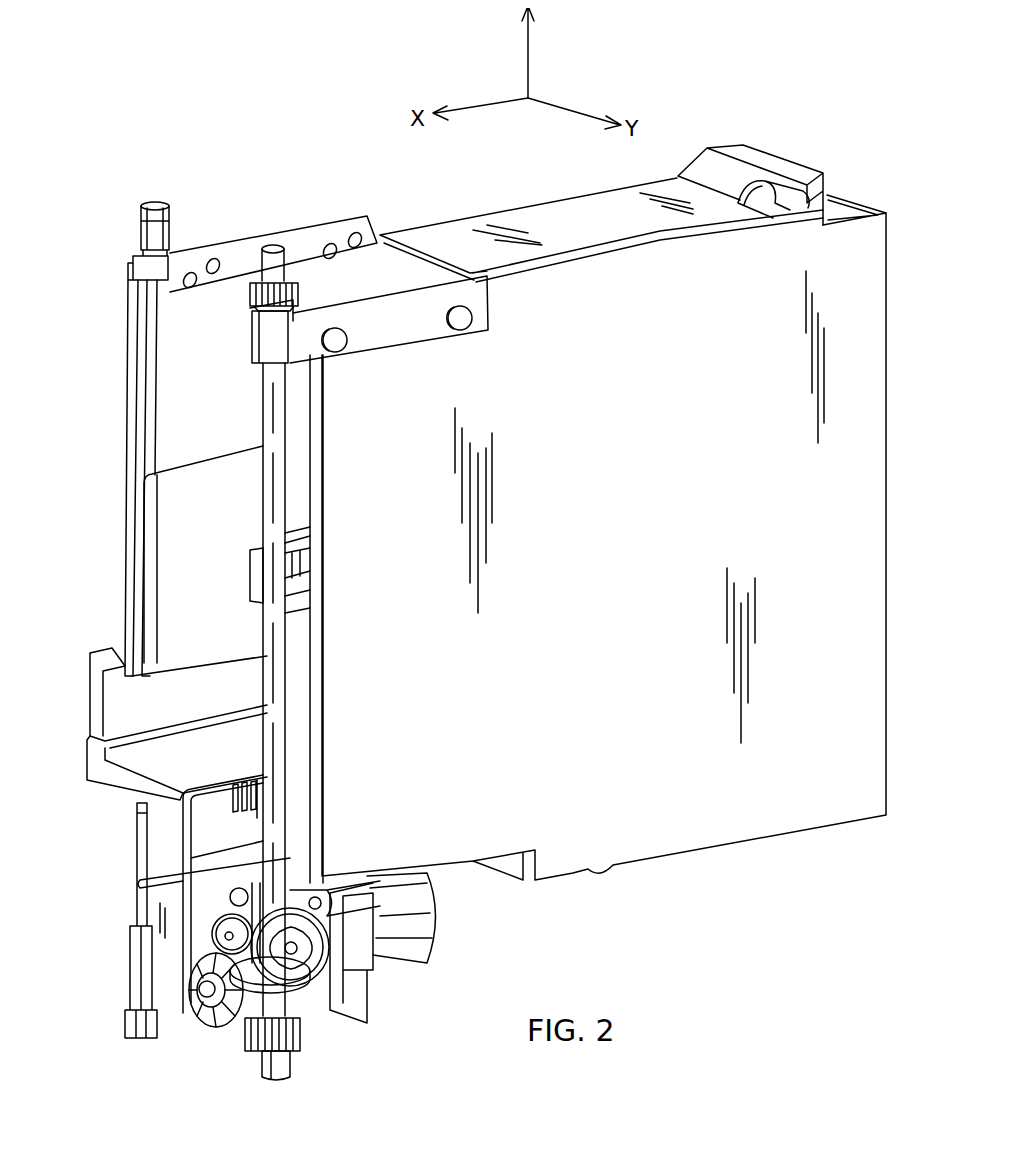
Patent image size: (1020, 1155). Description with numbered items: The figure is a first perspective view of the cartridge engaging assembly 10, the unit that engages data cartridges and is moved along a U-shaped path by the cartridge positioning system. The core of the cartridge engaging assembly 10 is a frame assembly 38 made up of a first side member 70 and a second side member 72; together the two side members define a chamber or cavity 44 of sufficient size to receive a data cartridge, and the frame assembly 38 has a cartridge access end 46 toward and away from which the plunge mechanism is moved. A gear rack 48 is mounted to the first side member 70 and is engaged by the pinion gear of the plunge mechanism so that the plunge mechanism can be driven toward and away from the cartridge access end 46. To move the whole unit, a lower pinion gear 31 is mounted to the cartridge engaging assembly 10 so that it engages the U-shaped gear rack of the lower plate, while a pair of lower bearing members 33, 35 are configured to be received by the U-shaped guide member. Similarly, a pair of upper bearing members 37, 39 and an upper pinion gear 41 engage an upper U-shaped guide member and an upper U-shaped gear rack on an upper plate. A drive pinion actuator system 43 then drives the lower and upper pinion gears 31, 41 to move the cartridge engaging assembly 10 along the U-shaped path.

The cartridge engaging assembly 10 is at (245, 128).
The lower pinion gear 31 is at (240, 1030).
The lower bearing member 33 is at (125, 1013).
The lower bearing member 35 is at (292, 1055).
The upper bearing member 37 is at (132, 258).
The frame assembly 38 is at (791, 141).
The upper bearing member 39 is at (256, 256).
The upper pinion gear 41 is at (250, 292).
The drive pinion actuator system 43 is at (452, 944).
The chamber or cavity 44 is at (184, 444).
The cartridge access end 46 is at (127, 562).
The gear rack 48 is at (248, 778).
The first side member 70 is at (498, 210).
The second side member 72 is at (628, 569).